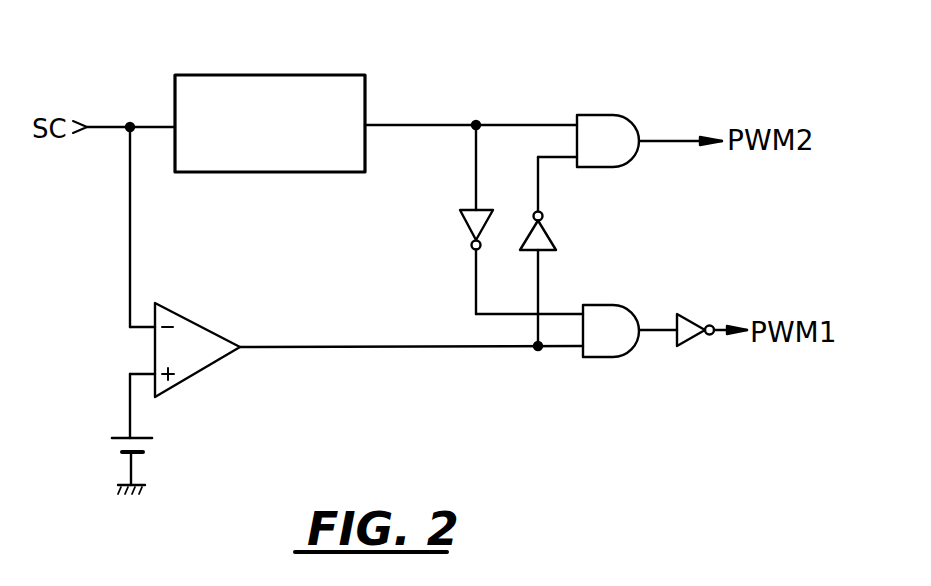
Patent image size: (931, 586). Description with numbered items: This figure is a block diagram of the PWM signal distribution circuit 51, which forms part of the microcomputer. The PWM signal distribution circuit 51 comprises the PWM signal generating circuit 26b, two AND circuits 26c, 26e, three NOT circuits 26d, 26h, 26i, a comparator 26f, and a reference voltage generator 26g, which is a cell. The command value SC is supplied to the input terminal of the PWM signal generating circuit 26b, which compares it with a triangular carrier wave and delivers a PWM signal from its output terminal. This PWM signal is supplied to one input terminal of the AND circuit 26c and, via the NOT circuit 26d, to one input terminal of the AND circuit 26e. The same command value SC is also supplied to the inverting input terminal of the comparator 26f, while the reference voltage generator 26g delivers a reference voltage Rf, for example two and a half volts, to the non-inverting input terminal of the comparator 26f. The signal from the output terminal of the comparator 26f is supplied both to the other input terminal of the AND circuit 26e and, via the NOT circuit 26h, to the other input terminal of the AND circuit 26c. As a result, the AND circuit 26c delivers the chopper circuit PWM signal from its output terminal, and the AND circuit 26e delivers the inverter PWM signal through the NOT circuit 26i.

The PWM signal generating circuit 26b is at (283, 74).
The AND circuit 26c is at (607, 114).
The NOT circuit 26d is at (462, 222).
The AND circuit 26e is at (610, 357).
The comparator 26f is at (203, 324).
The reference voltage generator 26g is at (111, 440).
The NOT circuit 26h is at (550, 234).
The NOT circuit 26i is at (683, 346).
The PWM signal distribution circuit 51 is at (398, 344).